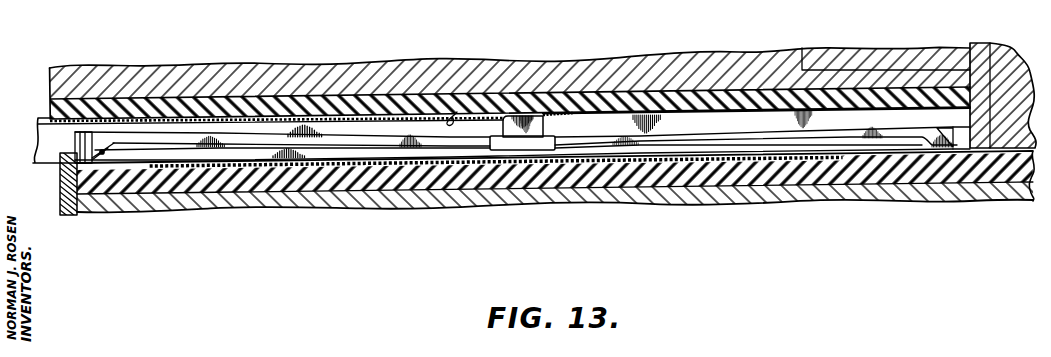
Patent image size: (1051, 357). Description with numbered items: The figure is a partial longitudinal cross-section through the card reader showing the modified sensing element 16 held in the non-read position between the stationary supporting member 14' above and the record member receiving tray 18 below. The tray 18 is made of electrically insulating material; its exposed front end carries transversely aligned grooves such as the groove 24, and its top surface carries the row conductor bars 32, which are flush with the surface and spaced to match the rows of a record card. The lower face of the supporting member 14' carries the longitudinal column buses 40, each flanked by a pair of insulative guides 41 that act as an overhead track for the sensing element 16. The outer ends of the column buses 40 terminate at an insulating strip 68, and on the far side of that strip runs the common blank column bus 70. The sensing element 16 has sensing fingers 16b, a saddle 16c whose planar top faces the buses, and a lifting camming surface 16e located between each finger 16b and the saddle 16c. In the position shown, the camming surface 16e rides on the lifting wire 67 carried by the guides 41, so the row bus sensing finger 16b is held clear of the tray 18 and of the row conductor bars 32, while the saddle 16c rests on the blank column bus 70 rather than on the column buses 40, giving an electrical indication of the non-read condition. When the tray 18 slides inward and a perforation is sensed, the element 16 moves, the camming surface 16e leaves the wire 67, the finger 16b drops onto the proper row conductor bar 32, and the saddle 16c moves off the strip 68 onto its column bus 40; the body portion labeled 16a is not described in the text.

The supporting member 14' is at (542, 89).
The sensing element 16 is at (66, 136).
The inner tube section 16a is at (375, 144).
The sensing finger 16b is at (962, 151).
The saddle 16c is at (553, 146).
The lifting camming surface 16e is at (110, 148).
The record member receiving tray 18 is at (465, 197).
The groove 24 is at (1013, 201).
The row conductor bar 32 is at (173, 168).
The column bus 40 is at (457, 112).
The insulative guide 41 is at (38, 117).
The lifting wire 67 is at (103, 158).
The insulating strip 68 is at (508, 116).
The common blank column bus 70 is at (582, 110).